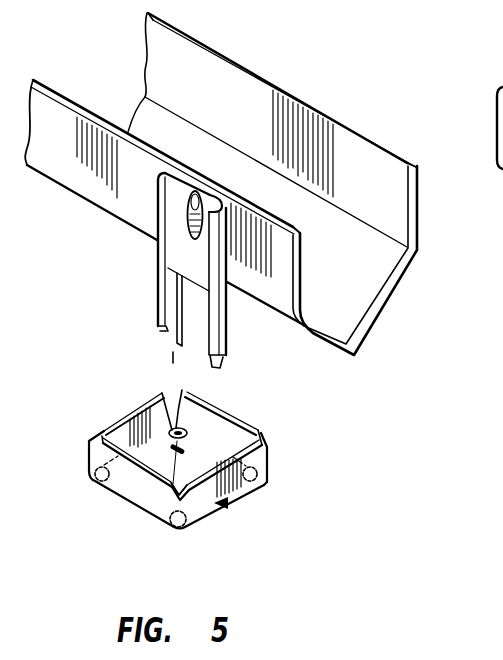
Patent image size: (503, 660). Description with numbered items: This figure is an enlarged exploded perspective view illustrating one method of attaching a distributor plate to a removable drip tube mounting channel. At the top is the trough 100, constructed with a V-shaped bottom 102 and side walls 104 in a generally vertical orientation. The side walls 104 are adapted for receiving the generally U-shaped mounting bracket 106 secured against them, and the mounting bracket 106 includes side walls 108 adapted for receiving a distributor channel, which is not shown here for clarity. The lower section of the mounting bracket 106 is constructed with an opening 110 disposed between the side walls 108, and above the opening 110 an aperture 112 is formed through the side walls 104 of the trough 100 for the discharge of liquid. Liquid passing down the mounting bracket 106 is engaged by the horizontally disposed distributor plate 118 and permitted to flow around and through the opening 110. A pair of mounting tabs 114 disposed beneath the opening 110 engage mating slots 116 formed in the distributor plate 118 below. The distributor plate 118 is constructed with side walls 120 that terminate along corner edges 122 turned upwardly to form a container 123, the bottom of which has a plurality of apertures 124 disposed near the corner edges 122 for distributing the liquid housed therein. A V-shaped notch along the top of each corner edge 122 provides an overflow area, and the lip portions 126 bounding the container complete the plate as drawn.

The trough 100 is at (238, 199).
The V-shaped bottom 102 is at (386, 307).
The side walls 104 is at (137, 206).
The mounting bracket 106 is at (174, 250).
The side walls 108 is at (164, 287).
The opening 110 is at (203, 323).
The aperture 112 is at (211, 197).
The mounting tabs 114 is at (170, 330).
The mating slots 116 is at (184, 447).
The distributor plate 118 is at (224, 503).
The side walls 120 is at (179, 465).
The corner edges 122 is at (190, 521).
The container 123 is at (161, 461).
The apertures 124 is at (161, 392).
The rim 126 is at (100, 438).